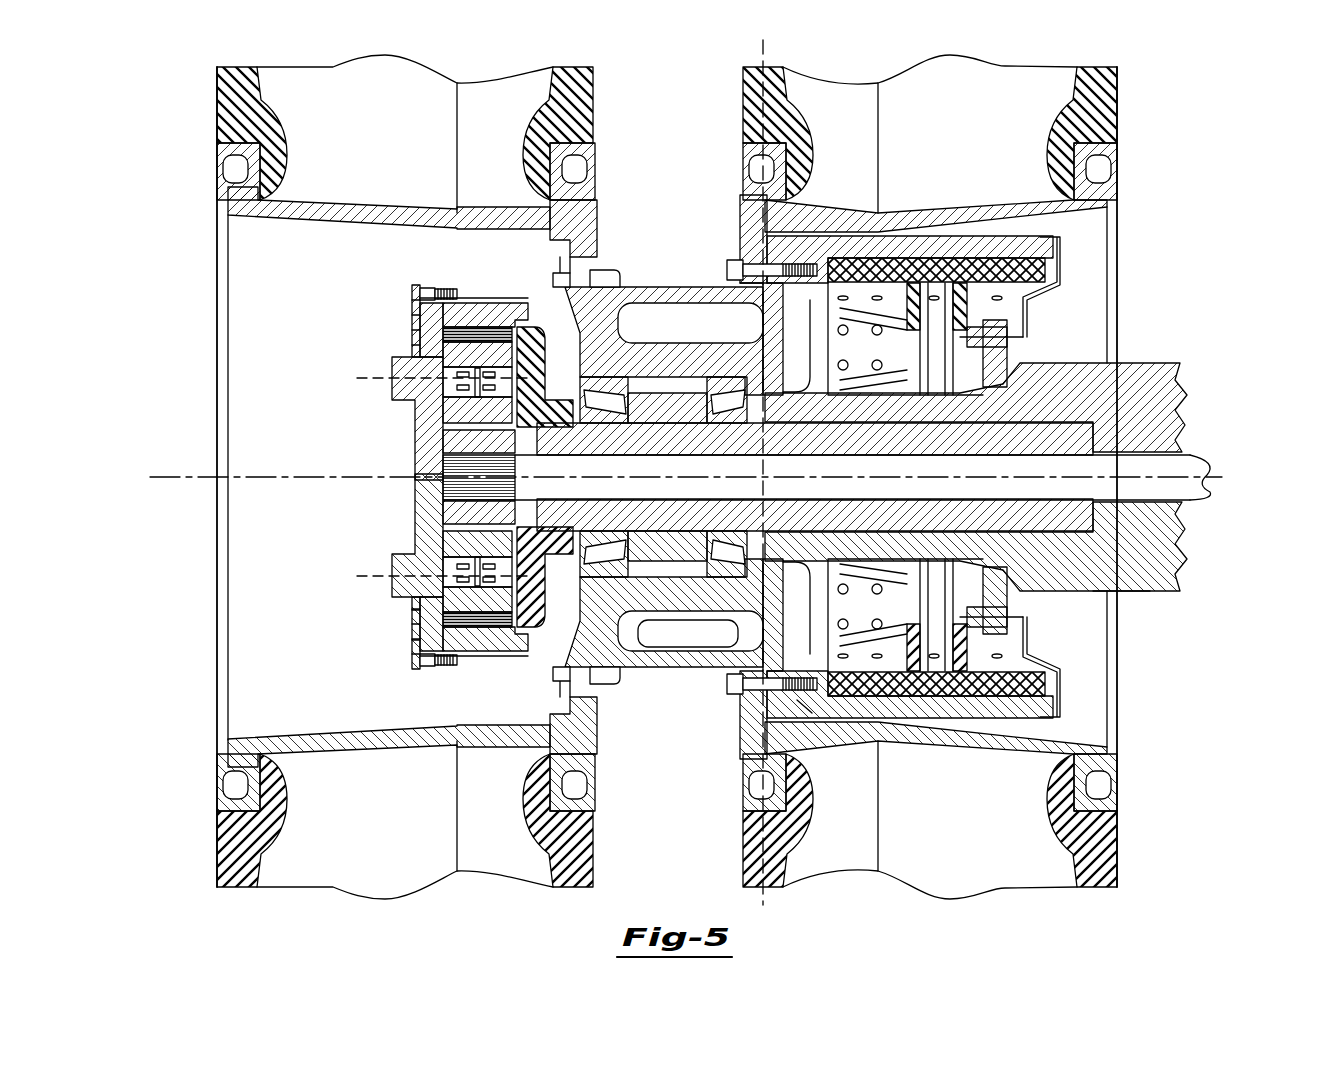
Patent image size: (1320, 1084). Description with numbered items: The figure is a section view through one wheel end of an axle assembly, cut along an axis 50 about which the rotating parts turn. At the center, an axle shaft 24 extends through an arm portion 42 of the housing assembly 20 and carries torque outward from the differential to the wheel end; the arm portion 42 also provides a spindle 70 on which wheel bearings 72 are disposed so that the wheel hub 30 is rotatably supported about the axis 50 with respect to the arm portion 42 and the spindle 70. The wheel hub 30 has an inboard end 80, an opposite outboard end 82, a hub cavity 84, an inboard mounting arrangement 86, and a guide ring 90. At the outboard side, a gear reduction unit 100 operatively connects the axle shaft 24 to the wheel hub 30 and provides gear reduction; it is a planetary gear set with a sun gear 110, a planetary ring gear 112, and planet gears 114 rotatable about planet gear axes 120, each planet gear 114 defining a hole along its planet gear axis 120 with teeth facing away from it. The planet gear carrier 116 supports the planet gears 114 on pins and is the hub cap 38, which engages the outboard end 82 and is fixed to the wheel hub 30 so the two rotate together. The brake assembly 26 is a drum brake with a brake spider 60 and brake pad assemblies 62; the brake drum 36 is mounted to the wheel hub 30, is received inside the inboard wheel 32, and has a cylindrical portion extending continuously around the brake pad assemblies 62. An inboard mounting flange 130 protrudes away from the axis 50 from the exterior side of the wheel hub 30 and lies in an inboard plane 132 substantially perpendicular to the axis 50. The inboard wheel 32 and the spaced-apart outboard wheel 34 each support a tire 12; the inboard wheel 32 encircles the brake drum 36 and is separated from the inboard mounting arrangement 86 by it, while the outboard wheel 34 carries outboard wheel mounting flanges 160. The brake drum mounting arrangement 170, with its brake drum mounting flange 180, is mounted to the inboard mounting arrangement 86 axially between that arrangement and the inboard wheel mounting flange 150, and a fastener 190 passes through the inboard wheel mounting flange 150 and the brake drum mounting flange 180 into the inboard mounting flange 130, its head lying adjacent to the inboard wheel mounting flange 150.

The tire 12 is at (222, 132).
The housing assembly 20 is at (1165, 578).
The axle shaft 24 is at (1190, 455).
The brake assembly 26 is at (1060, 303).
The wheel hub 30 is at (657, 287).
The inboard wheel 32 is at (1117, 182).
The outboard wheel 34 is at (228, 185).
The brake drum 36 is at (1050, 258).
The hub cap 38 is at (392, 455).
The arm portion 42 is at (1147, 592).
The axis 50 is at (178, 470).
The brake spider 60 is at (1007, 343).
The brake pad assembly 62 is at (1060, 275).
The spindle 70 is at (700, 440).
The wheel bearing 72 is at (695, 374).
The inboard end 80 is at (843, 318).
The outboard end 82 is at (414, 288).
The hub cavity 84 is at (552, 333).
The inboard mounting arrangement 86 is at (800, 262).
The guide ring 90 is at (755, 298).
The gear reduction unit 100 is at (478, 301).
The sun gear 110 is at (445, 512).
The planetary ring gear 112 is at (424, 318).
The planet gear 114 is at (443, 352).
The planet gear carrier 116 is at (416, 628).
The planet gear axis 120 is at (372, 385).
The inboard mounting flange 130 is at (805, 713).
The inboard plane 132 is at (763, 905).
The inboard wheel mounting flange 150 is at (742, 240).
The outboard wheel mounting flange 160 is at (590, 250).
The brake drum mounting arrangement 170 is at (760, 648).
The brake drum mounting flange 180 is at (762, 318).
The fastener 190 is at (740, 268).